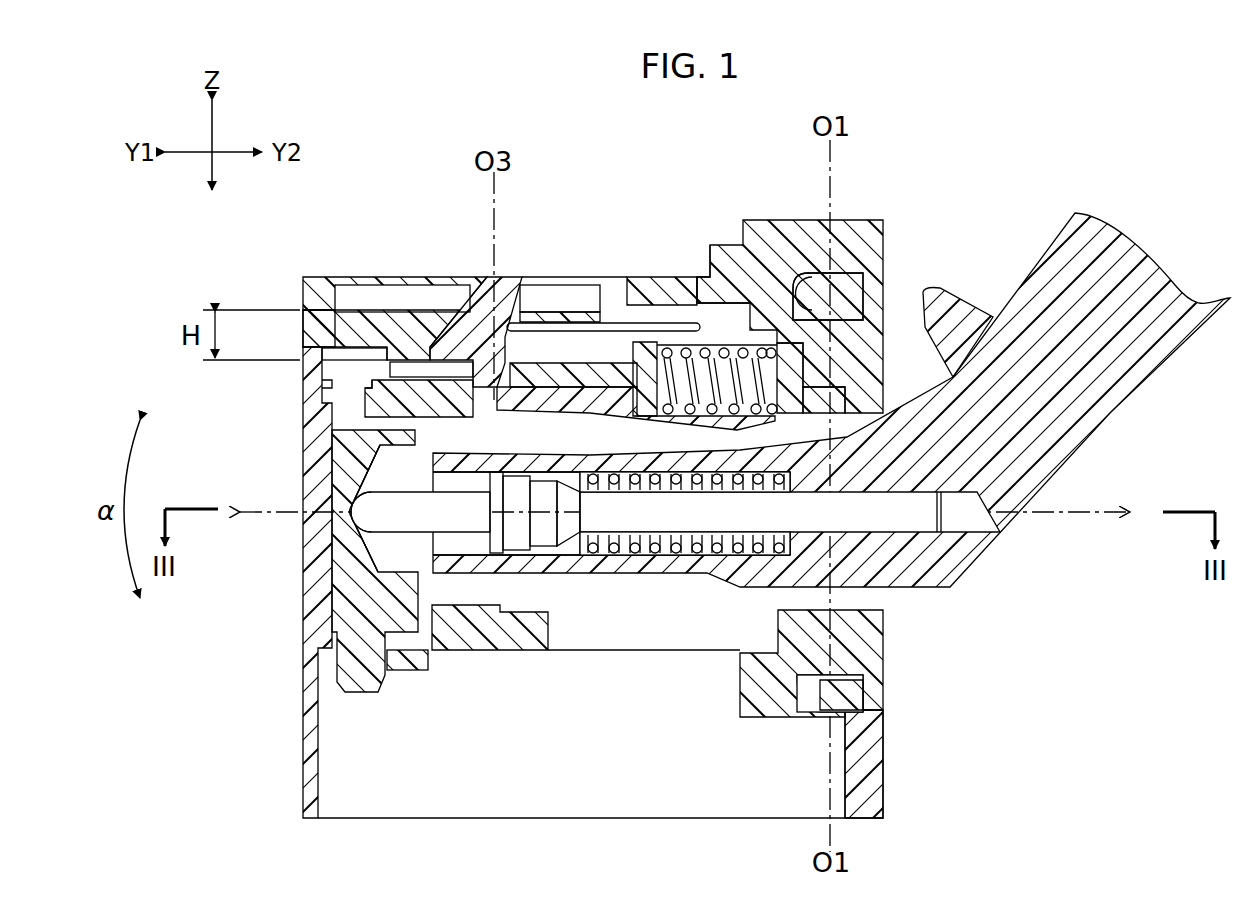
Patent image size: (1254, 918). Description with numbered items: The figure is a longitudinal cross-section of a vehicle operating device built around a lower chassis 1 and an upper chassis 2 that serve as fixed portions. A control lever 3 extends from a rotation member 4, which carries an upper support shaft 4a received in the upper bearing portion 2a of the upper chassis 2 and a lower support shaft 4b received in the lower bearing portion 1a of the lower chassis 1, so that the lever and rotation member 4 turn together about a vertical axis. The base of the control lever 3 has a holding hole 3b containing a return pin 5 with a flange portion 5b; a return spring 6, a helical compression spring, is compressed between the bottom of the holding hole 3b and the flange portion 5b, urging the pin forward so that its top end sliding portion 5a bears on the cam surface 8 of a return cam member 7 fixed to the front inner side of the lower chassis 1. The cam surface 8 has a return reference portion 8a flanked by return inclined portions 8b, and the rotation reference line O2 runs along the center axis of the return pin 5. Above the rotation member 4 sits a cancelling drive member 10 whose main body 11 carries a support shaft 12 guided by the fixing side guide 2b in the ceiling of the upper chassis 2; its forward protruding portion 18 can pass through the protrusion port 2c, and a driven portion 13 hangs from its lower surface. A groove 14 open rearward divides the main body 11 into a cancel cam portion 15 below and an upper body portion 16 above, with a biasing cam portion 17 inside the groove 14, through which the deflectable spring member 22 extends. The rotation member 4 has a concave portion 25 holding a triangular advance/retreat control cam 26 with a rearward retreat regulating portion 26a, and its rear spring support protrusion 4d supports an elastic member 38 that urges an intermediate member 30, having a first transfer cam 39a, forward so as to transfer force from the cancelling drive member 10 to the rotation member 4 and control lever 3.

The lower chassis 1 is at (865, 760).
The lower bearing portion 1a is at (812, 692).
The upper chassis 2 is at (738, 238).
The upper bearing portion 2a is at (810, 272).
The fixing side guide 2b is at (445, 298).
The protrusion port 2c is at (320, 300).
The control lever 3 is at (1152, 342).
The holding hole 3b is at (614, 556).
The rotation member 4 is at (518, 652).
The upper support shaft 4a is at (878, 290).
The lower support shaft 4b is at (845, 690).
The spring support protrusion 4d is at (812, 396).
The return pin 5 is at (680, 522).
The top end sliding portion 5a is at (366, 512).
The flange portion 5b is at (516, 548).
The return spring 6 is at (726, 558).
The return cam member 7 is at (343, 470).
The cam surface 8 is at (340, 437).
The return reference portion 8a is at (350, 514).
The return inclined portions 8b is at (370, 468).
The cancelling drive member 10 is at (566, 303).
The main body 11 is at (440, 330).
The support shaft 12 is at (500, 290).
The driven portion 13 is at (545, 380).
The groove 14 is at (598, 316).
The cancel cam portion 15 is at (600, 412).
The upper body portion 16 is at (642, 290).
The biasing cam portion 17 is at (530, 325).
The protruding portion 18 is at (318, 330).
The deflectable spring member 22 is at (733, 262).
The concave portion 25 is at (492, 405).
The advance/retreat control cam 26 is at (318, 372).
The retreat regulating portion 26a is at (455, 419).
The intermediate member 30 is at (672, 350).
The elastic member 38 is at (760, 415).
The first transfer cam 39a is at (405, 350).
The rotation reference line O2 is at (442, 514).